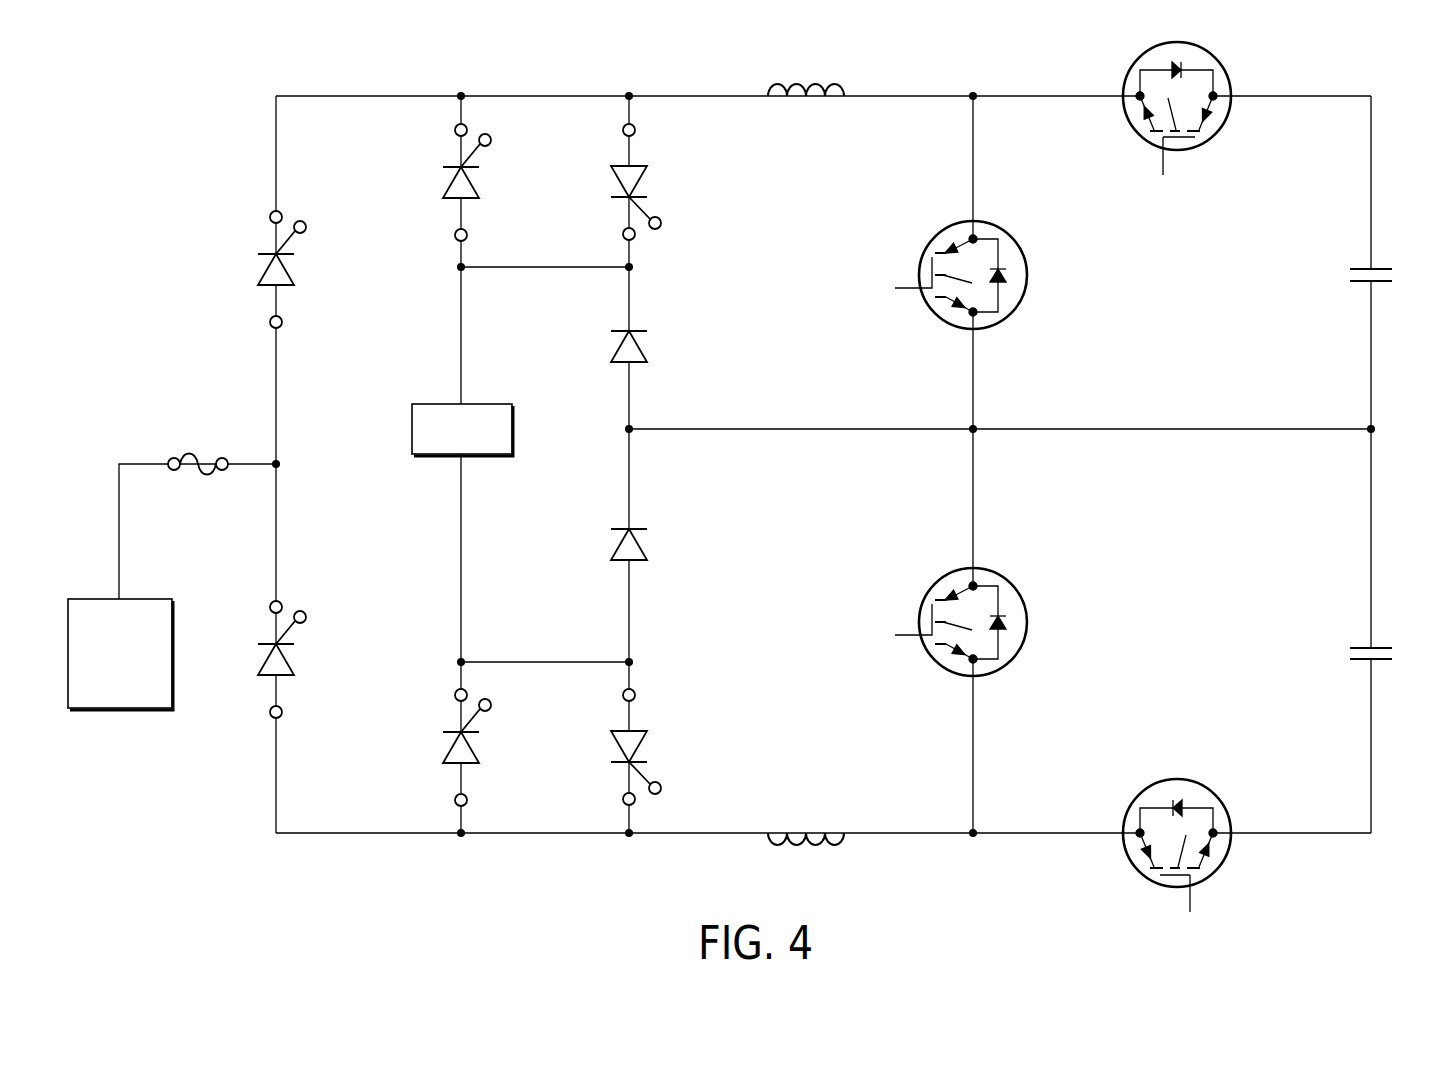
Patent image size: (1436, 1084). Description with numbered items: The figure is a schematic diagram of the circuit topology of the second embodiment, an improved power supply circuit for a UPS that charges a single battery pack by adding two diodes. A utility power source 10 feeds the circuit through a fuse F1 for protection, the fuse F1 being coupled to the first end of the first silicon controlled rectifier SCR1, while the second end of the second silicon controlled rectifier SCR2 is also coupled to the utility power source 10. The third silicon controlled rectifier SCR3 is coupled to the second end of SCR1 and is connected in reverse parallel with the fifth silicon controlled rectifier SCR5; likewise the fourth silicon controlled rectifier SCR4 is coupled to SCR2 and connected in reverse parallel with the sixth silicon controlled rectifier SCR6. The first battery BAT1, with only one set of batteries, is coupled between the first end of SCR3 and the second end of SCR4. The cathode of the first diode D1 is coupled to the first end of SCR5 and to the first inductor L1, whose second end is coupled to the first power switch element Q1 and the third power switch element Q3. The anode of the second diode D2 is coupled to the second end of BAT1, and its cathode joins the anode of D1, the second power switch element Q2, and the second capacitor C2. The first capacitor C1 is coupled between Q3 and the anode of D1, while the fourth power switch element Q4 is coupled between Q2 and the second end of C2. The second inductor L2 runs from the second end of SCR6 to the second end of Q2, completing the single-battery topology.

The utility power source 10 is at (120, 709).
The fuse F1 is at (198, 441).
The first silicon controlled rectifier SCR1 is at (315, 269).
The second silicon controlled rectifier SCR2 is at (315, 659).
The third silicon controlled rectifier SCR3 is at (429, 182).
The fourth silicon controlled rectifier SCR4 is at (429, 747).
The fifth silicon controlled rectifier SCR5 is at (599, 182).
The sixth silicon controlled rectifier SCR6 is at (599, 747).
The first diode D1 is at (609, 349).
The second diode D2 is at (609, 547).
The first battery BAT1 is at (462, 430).
The first inductor L1 is at (806, 69).
The second inductor L2 is at (806, 858).
The first capacitor C1 is at (1391, 276).
The second capacitor C2 is at (1391, 654).
The first power switch element Q1 is at (984, 275).
The second power switch element Q2 is at (984, 622).
The third power switch element Q3 is at (1177, 121).
The fourth power switch element Q4 is at (1199, 845).